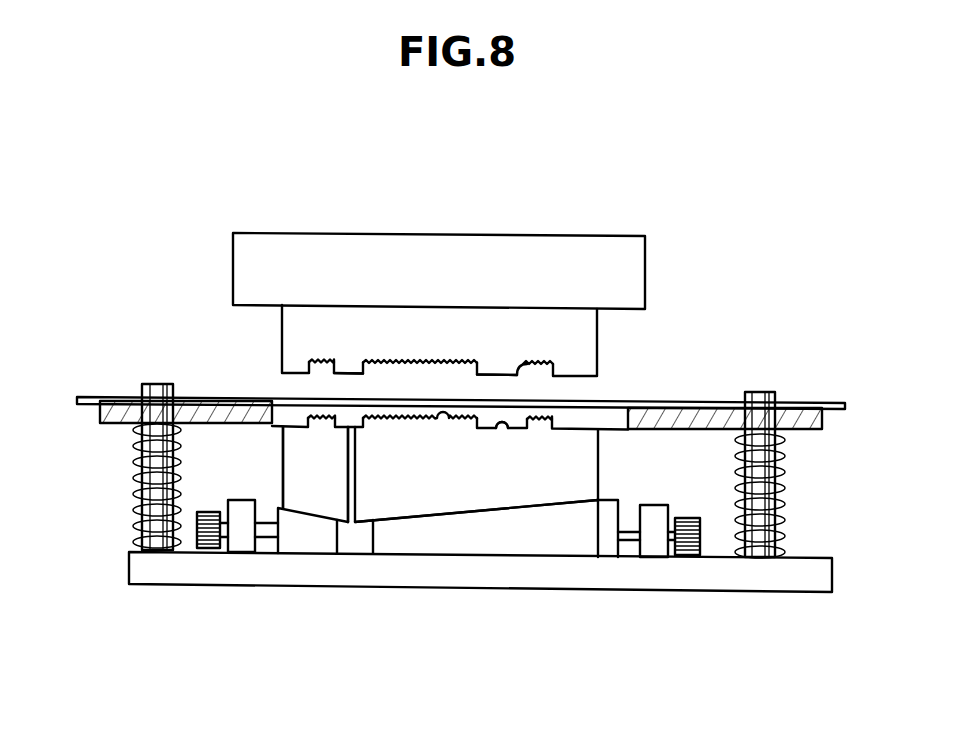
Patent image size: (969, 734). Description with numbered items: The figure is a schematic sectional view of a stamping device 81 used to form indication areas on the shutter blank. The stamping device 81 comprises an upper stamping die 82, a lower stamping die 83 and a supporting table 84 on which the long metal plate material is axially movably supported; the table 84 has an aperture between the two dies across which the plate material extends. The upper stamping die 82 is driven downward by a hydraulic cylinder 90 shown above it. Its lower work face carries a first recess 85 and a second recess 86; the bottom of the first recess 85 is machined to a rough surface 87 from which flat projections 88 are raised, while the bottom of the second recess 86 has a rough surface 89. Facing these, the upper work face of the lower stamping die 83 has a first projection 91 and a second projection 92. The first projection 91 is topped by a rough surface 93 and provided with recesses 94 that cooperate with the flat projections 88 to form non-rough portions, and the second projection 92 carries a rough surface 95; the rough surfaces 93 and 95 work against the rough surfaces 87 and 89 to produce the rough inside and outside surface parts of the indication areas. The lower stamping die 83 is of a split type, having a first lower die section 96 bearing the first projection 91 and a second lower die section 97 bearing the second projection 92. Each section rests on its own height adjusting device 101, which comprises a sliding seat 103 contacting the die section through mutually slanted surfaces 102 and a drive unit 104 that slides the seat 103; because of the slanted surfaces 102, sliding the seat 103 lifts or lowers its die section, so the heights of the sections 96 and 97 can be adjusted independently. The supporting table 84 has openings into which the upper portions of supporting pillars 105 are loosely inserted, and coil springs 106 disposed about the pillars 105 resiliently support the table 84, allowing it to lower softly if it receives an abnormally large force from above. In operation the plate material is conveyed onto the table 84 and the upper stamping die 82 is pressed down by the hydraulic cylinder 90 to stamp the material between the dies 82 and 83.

The stamping device 81 is at (212, 258).
The upper stamping die 82 is at (200, 314).
The lower stamping die 83 is at (465, 663).
The supporting table 84 is at (115, 397).
The first recess 85 is at (417, 376).
The second recess 86 is at (327, 370).
The rough surface 87 is at (450, 367).
The flat projections 88 is at (523, 363).
The rough surface 89 is at (323, 360).
The hydraulic cylinder 90 is at (278, 247).
The first projection 91 is at (423, 428).
The second projection 92 is at (320, 428).
The rough surface 93 is at (548, 419).
The recesses 94 is at (513, 428).
The rough surface 95 is at (305, 413).
The first lower die section 96 is at (442, 507).
The second lower die section 97 is at (325, 505).
The height adjusting device 101 is at (283, 663).
The slanted surfaces 102 is at (310, 520).
The sliding seat 103 is at (283, 547).
The drive unit 104 is at (207, 547).
The supporting pillars 105 is at (152, 460).
The coil springs 106 is at (137, 495).